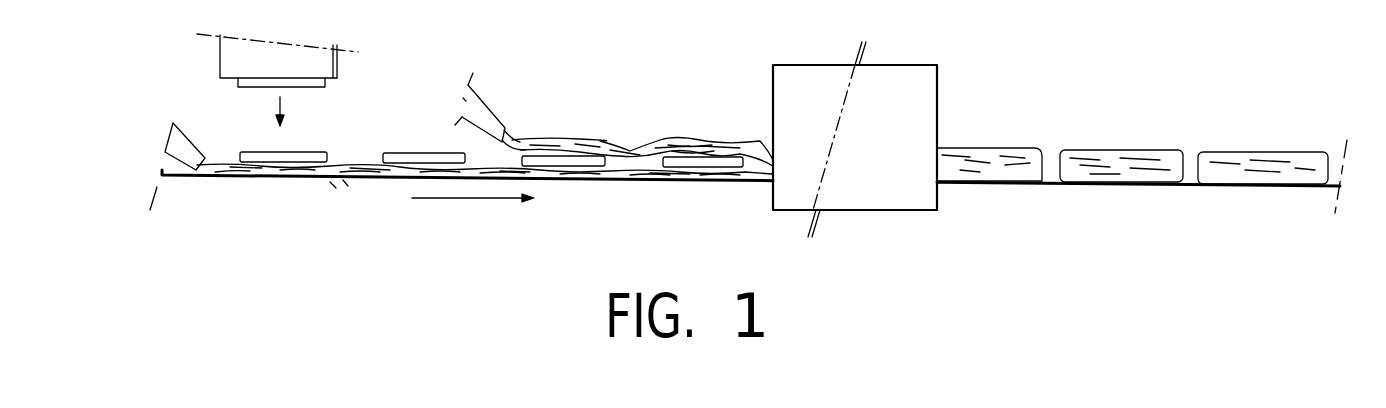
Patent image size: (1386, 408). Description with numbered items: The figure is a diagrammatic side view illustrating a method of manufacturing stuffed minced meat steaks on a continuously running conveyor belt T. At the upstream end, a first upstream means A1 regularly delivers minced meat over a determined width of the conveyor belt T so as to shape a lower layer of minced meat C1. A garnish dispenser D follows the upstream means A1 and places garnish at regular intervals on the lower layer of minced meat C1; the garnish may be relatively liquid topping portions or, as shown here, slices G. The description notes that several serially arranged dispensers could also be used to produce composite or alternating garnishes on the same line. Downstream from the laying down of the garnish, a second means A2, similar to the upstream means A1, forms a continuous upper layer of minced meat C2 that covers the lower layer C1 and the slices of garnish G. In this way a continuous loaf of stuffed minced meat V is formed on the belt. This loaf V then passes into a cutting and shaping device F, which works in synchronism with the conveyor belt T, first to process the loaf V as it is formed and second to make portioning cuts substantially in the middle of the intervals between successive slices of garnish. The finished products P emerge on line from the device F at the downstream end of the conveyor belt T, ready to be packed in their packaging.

The garnish dispenser D is at (222, 57).
The first upstream means A1 is at (188, 153).
The slices of garnish G is at (302, 157).
The lower layer of minced meat C1 is at (266, 170).
The conveyor belt T is at (405, 180).
The second means A2 is at (483, 113).
The upper layer of minced meat C2 is at (583, 142).
The continuous loaf of stuffed minced meat V is at (687, 150).
The cutting and shaping device F is at (812, 80).
The finished products P is at (1143, 162).